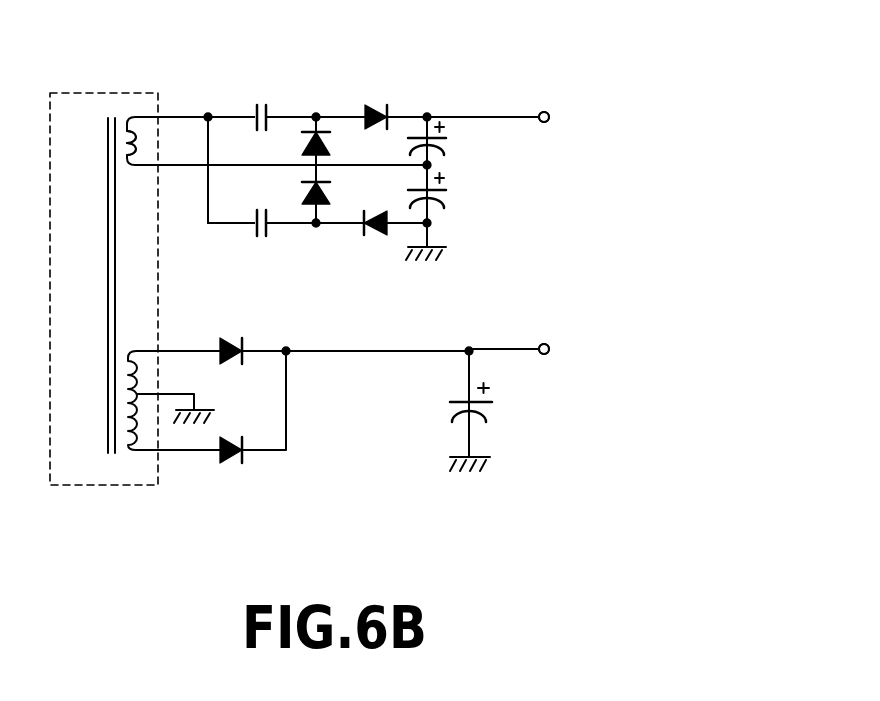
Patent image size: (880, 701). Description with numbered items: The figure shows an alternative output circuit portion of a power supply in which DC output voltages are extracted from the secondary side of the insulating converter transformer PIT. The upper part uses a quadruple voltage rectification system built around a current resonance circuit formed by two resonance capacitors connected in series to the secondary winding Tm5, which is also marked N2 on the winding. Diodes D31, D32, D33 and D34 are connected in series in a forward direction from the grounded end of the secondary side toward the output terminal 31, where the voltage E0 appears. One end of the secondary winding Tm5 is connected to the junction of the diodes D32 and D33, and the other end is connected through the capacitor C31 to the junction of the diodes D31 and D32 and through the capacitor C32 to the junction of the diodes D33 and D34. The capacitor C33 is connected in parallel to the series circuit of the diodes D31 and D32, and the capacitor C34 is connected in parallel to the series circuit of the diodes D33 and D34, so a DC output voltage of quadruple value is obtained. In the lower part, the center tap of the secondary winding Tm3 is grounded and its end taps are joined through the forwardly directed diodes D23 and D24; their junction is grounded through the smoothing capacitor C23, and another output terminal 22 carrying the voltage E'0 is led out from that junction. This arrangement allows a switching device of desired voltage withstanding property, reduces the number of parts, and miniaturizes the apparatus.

The insulating converter transformer PIT is at (104, 309).
The secondary winding N2 is at (277, 141).
The secondary winding Tm5 is at (150, 147).
The secondary winding Tm3 is at (145, 437).
The capacitor C31 is at (259, 104).
The capacitor C32 is at (260, 208).
The capacitor C33 is at (447, 200).
The capacitor C34 is at (447, 145).
The capacitor C23 is at (493, 412).
The diode D31 is at (378, 236).
The diode D32 is at (330, 196).
The diode D33 is at (330, 143).
The diode D34 is at (376, 105).
The diode D23 is at (230, 360).
The diode D24 is at (230, 460).
The output terminal 31 is at (542, 111).
The output terminal 22 is at (544, 343).
The DC output voltage E0 is at (562, 118).
The DC output voltage E'0 is at (566, 350).